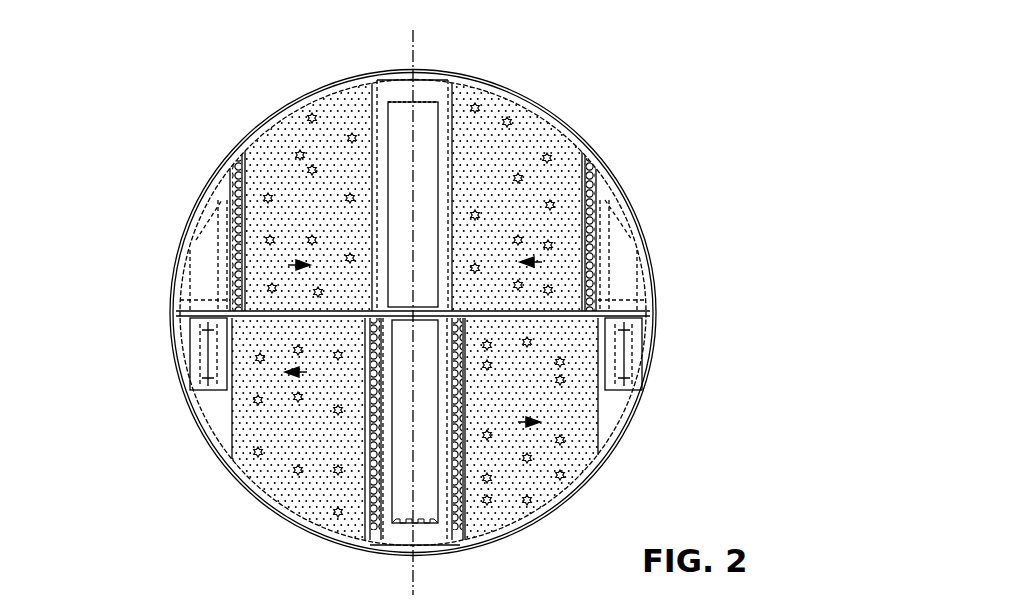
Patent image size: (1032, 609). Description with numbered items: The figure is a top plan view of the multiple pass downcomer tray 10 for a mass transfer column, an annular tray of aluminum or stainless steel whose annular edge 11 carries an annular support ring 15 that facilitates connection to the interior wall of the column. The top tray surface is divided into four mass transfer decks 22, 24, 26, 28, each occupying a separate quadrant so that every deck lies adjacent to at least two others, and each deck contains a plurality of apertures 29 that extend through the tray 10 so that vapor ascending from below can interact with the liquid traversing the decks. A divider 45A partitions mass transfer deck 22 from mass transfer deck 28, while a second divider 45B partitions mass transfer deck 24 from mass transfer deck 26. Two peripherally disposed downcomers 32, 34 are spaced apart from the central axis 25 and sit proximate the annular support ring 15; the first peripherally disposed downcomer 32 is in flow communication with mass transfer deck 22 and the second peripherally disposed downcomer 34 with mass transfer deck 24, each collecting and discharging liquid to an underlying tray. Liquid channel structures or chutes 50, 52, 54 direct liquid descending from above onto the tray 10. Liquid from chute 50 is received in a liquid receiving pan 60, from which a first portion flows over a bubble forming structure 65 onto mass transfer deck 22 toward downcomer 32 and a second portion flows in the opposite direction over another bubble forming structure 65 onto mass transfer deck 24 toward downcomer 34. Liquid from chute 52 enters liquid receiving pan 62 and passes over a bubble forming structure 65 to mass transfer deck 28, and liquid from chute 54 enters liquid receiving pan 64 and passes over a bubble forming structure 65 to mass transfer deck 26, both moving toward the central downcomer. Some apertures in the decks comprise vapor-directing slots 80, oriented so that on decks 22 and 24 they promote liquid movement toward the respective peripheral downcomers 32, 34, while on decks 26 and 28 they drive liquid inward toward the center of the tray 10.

The multiple pass downcomer tray 10 is at (92, 148).
The annular edge 11 is at (533, 97).
The annular support ring 15 is at (650, 355).
The mass transfer deck 22 is at (542, 413).
The mass transfer deck 24 is at (312, 433).
The central axis 25 is at (413, 30).
The mass transfer deck 26 is at (324, 220).
The mass transfer deck 28 is at (530, 220).
The apertures 29 is at (306, 148).
The peripherally disposed downcomer 32 is at (628, 392).
The peripherally disposed downcomer 34 is at (198, 390).
The divider 45A is at (565, 310).
The divider 45B is at (265, 312).
The liquid channel structure or chute 50 is at (427, 228).
The liquid channel structure or chute 52 is at (627, 370).
The liquid channel structure or chute 54 is at (207, 370).
The liquid receiving pan 60 is at (427, 441).
The liquid receiving pan 62 is at (616, 266).
The liquid receiving pan 64 is at (208, 268).
The bubble forming structure 65 is at (238, 200).
The vapor-directing slots 80 is at (312, 118).